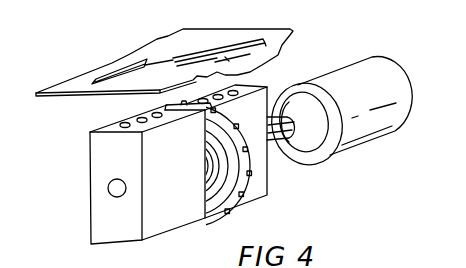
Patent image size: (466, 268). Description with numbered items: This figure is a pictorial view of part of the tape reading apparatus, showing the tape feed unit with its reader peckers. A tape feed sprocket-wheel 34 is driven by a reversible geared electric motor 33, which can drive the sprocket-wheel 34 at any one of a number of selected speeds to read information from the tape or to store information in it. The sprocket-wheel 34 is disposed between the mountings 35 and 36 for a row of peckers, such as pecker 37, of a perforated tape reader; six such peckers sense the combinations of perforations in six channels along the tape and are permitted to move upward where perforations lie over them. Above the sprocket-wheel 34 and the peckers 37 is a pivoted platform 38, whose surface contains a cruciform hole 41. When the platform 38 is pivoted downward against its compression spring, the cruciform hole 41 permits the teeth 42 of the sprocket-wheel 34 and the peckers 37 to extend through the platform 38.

The reversible geared electric motor 33 is at (358, 136).
The tape feed sprocket-wheel 34 is at (241, 200).
The mounting 35 is at (158, 222).
The mounting 36 is at (229, 211).
The pecker 37 is at (115, 125).
The platform 38 is at (91, 82).
The cruciform hole 41 is at (166, 67).
The teeth 42 is at (250, 173).